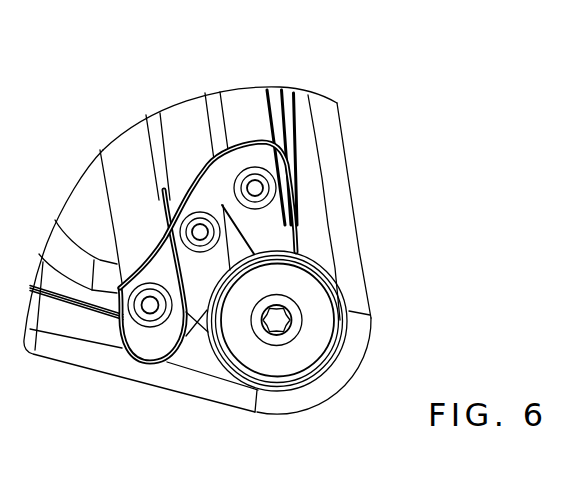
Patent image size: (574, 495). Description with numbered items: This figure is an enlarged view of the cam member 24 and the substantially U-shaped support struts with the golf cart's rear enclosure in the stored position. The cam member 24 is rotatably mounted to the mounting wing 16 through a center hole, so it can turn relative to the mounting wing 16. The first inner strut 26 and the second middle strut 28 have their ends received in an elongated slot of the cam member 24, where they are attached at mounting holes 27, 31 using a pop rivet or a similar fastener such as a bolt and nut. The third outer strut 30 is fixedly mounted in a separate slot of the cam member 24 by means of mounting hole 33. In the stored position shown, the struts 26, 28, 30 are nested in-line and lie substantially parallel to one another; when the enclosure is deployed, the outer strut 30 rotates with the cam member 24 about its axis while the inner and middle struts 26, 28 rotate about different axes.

The mounting wing 16 is at (190, 382).
The cam member 24 is at (389, 285).
The first inner strut 26 is at (127, 153).
The mounting hole 27 is at (147, 311).
The second middle strut 28 is at (185, 122).
The third outer strut 30 is at (245, 107).
The mounting hole 31 is at (208, 231).
The mounting hole 33 is at (267, 182).